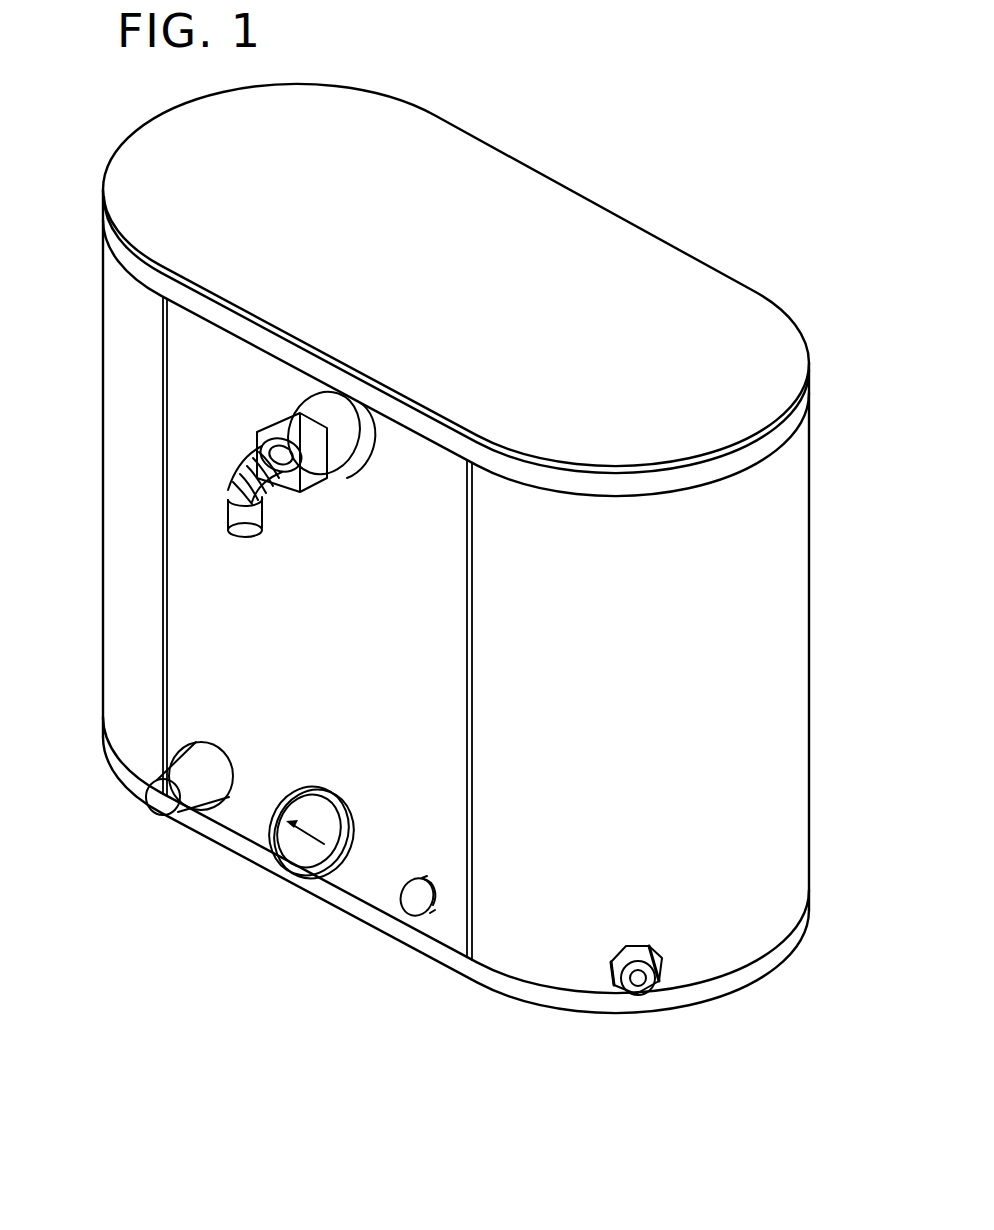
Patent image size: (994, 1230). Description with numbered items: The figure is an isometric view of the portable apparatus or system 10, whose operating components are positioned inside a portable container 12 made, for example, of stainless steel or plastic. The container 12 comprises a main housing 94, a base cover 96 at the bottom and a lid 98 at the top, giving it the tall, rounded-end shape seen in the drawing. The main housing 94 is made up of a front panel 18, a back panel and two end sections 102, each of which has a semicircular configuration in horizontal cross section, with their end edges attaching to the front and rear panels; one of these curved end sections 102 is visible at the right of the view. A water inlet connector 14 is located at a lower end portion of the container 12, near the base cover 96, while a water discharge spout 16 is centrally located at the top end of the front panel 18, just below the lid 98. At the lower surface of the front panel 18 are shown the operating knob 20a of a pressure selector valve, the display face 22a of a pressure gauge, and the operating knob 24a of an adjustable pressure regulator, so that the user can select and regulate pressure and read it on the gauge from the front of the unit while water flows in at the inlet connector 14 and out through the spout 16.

The apparatus or system 10 is at (598, 178).
The portable container 12 is at (824, 561).
The water inlet connector 14 is at (635, 982).
The water discharge spout 16 is at (252, 522).
The front panel 18 is at (192, 568).
The operating knob 20a is at (405, 888).
The display face 22a is at (300, 845).
The operating knob 24a is at (170, 772).
The main housing 94 is at (780, 652).
The base cover 96 is at (398, 930).
The lid 98 is at (638, 250).
The end sections 102 is at (768, 700).